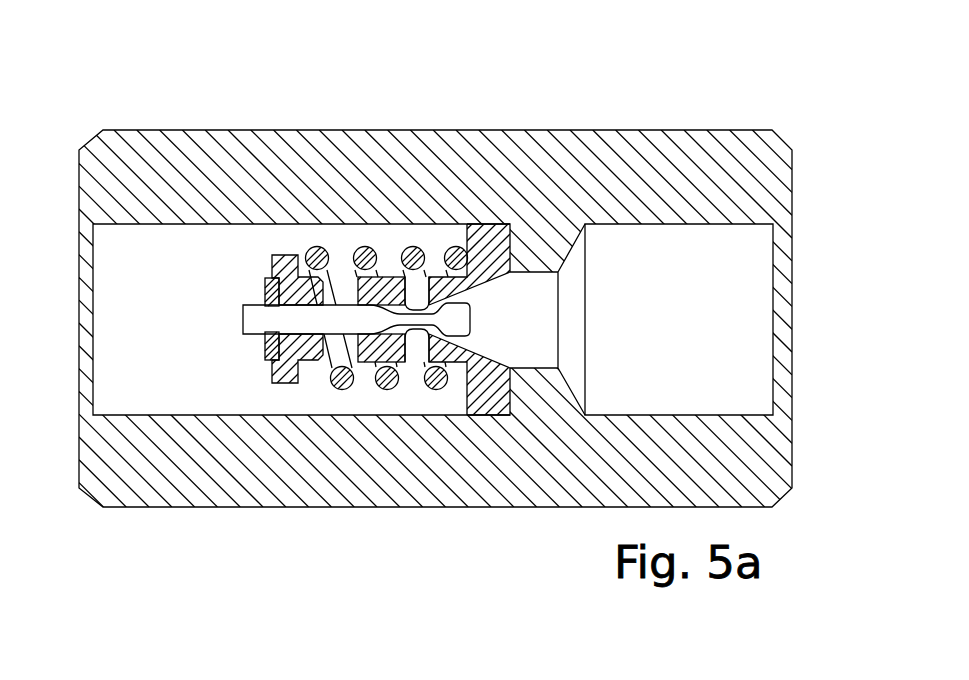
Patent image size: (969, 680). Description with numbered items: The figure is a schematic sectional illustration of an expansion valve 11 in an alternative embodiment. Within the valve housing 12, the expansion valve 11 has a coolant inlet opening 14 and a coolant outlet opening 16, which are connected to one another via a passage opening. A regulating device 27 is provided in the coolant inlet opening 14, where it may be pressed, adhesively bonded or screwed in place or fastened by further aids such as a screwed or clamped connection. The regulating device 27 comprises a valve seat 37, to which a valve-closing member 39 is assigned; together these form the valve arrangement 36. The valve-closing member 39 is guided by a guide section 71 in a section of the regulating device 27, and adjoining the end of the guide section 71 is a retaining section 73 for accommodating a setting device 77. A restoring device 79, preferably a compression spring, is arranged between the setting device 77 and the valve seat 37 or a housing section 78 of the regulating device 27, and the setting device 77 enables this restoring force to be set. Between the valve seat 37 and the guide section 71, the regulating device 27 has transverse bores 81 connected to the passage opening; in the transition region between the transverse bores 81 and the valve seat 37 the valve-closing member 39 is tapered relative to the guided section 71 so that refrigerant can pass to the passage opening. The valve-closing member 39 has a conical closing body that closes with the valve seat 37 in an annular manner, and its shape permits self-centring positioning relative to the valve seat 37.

The expansion valve 11 is at (591, 104).
The valve housing 12 is at (203, 158).
The coolant inlet opening 14 is at (138, 335).
The coolant outlet opening 16 is at (753, 352).
The regulating device 27 is at (276, 403).
The valve arrangement 36 is at (440, 273).
The valve seat 37 is at (556, 283).
The valve-closing member 39 is at (472, 327).
The guide section 71 is at (368, 318).
The retaining section 73 is at (346, 276).
The setting device 77 is at (247, 288).
The housing section 78 is at (387, 277).
The restoring device 79 is at (342, 390).
The transverse bores 81 is at (415, 350).